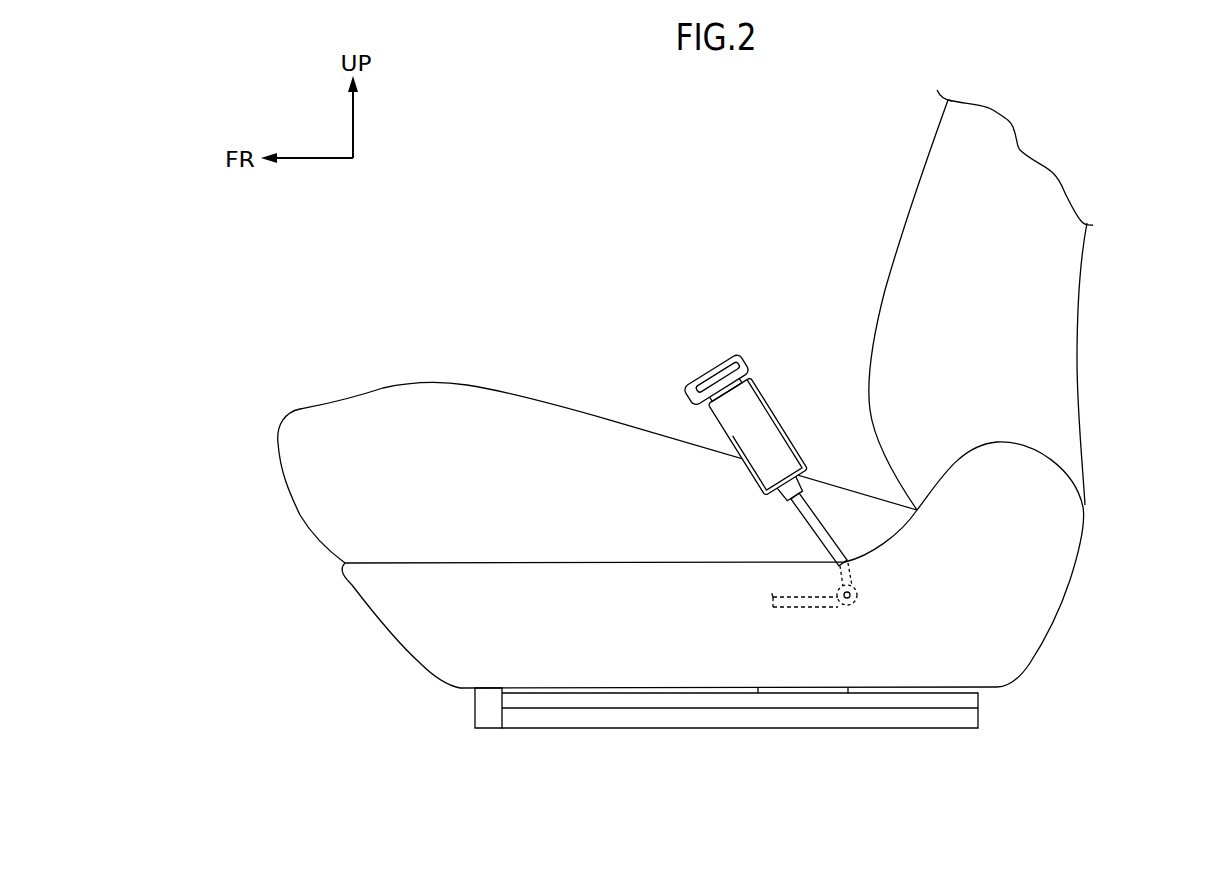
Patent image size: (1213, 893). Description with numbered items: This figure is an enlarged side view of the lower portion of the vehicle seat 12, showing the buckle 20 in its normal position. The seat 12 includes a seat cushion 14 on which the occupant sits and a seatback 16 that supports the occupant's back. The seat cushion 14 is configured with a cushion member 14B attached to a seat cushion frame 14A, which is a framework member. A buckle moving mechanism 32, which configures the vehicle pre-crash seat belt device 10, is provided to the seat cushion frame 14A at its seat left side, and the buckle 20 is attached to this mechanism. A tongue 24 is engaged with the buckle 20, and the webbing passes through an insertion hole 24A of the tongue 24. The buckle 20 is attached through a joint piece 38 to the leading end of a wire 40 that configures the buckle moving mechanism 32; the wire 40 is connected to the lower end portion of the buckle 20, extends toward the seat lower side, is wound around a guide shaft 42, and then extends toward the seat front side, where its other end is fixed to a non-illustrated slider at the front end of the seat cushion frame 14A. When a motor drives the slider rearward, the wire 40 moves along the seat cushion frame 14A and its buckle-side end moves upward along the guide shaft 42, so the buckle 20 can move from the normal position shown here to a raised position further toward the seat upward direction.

The vehicle pre-crash seat belt device 10 is at (803, 690).
The vehicle seat 12 is at (1035, 300).
The seat cushion 14 is at (677, 554).
The seat cushion frame 14A is at (388, 627).
The cushion member 14B is at (287, 485).
The seatback 16 is at (1079, 358).
The buckle 20 is at (774, 407).
The tongue 24 is at (683, 331).
The insertion hole 24A is at (702, 387).
The buckle moving mechanism 32 is at (726, 711).
The joint piece 38 is at (831, 533).
The wire 40 is at (797, 607).
The guide shaft 42 is at (838, 587).